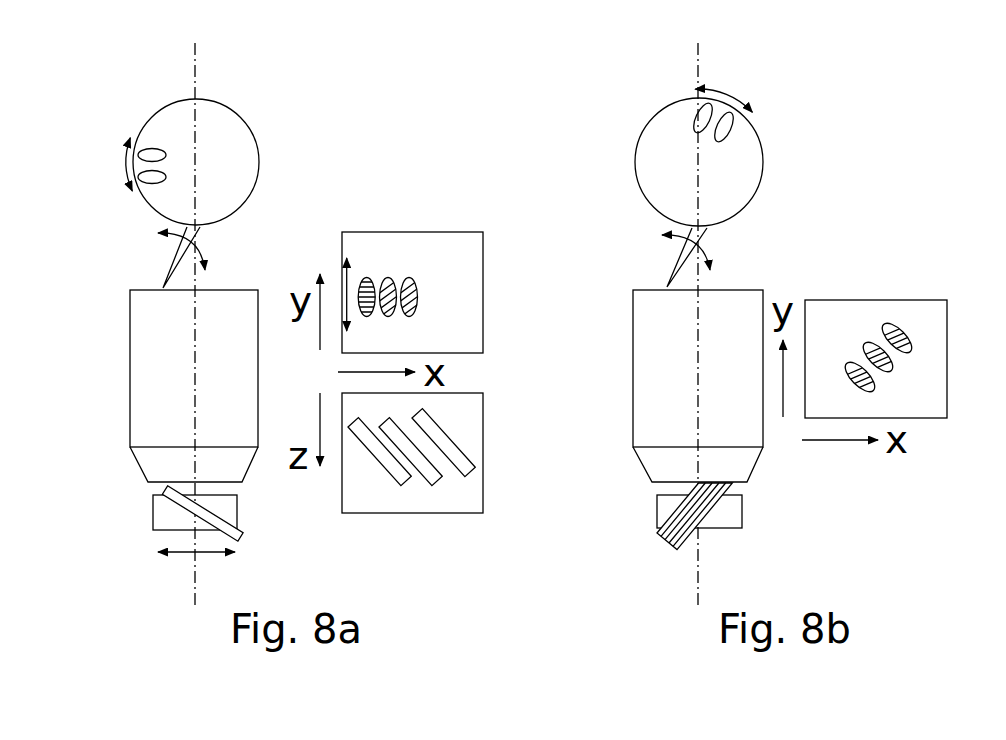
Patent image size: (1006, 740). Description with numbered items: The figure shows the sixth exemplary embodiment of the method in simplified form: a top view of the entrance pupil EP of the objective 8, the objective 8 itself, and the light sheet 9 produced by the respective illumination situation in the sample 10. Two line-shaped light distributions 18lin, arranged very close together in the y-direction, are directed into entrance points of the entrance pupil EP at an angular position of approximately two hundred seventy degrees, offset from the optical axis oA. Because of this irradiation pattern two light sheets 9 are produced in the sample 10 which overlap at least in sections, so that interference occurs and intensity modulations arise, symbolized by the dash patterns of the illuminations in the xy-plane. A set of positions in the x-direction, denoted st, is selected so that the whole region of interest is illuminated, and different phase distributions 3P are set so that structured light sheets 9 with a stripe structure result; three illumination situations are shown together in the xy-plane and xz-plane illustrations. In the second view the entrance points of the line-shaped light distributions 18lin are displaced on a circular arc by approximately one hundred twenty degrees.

In FIG. 8a, the entrance pupil EP is at (163, 105).
In FIG. 8b, the entrance pupil EP is at (668, 103).
In FIG. 8a, the optical axis oA is at (197, 160).
In FIG. 8b, the optical axis oA is at (697, 190).
In FIG. 8a, the phase distributions 3P is at (98, 164).
In FIG. 8b, the phase distributions 3P is at (731, 80).
In FIG. 8a, the line-shaped light distribution 18lin is at (152, 183).
In FIG. 8b, the line-shaped light distribution 18lin is at (722, 137).
In FIG. 8a, the set of positions in the x-direction st is at (204, 258).
In FIG. 8b, the set of positions in the x-direction st is at (711, 261).
In FIG. 8a, the objective 8 is at (176, 398).
In FIG. 8b, the objective 8 is at (680, 398).
In FIG. 8a, the sample 10 is at (153, 518).
In FIG. 8b, the sample 10 is at (657, 518).
In FIG. 8a, the light sheet 9 is at (243, 538).
In FIG. 8b, the light sheet 9 is at (682, 547).